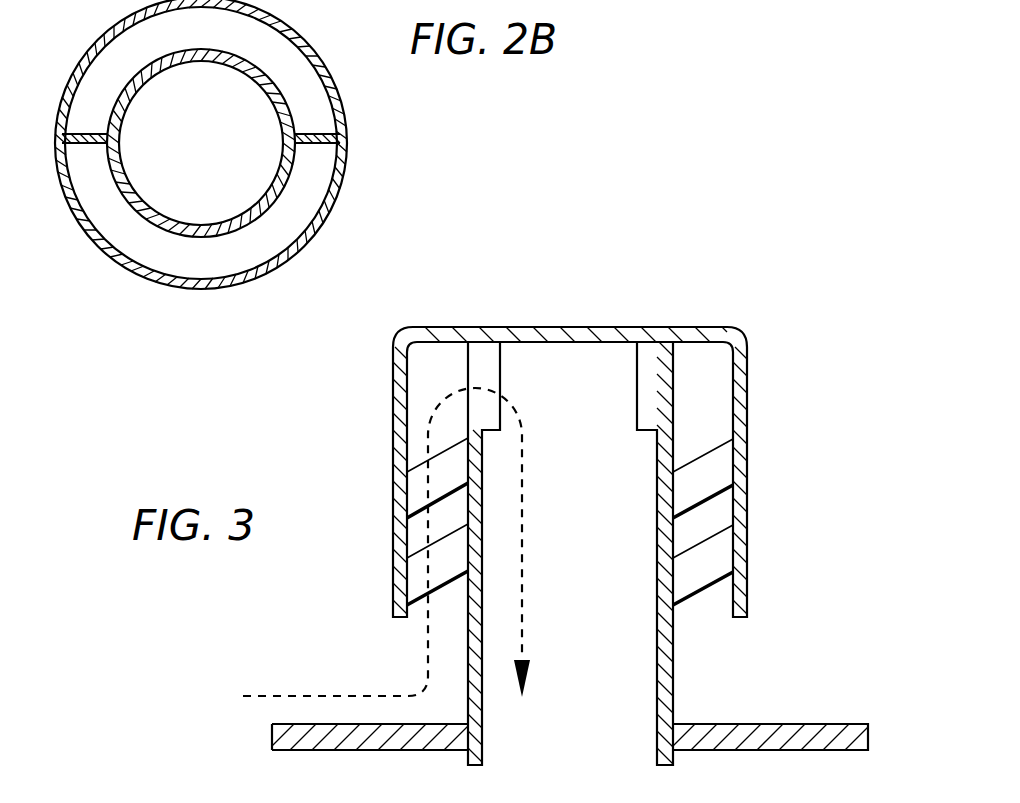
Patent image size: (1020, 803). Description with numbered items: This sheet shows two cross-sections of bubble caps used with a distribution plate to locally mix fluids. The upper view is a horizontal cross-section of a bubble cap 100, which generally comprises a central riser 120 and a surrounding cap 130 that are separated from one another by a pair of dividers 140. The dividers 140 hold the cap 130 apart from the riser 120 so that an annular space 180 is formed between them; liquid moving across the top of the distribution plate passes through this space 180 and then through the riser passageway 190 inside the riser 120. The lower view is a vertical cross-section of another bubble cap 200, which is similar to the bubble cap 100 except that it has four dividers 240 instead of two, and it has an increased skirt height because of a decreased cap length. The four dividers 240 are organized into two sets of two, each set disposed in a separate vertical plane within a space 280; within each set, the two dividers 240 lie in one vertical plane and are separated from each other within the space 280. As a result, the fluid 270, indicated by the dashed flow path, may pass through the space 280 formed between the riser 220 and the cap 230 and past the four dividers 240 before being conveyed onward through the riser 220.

In FIG. 2B, the bubble cap 100 is at (392, 170).
In FIG. 2B, the riser 120 is at (266, 62).
In FIG. 2B, the cap 130 is at (92, 245).
In FIG. 2B, the dividers 140 is at (84, 146).
In FIG. 2B, the space 180 is at (300, 204).
In FIG. 2B, the riser passageway 190 is at (219, 146).
In FIG. 3, the bubble cap 200 is at (727, 296).
In FIG. 3, the riser 220 is at (676, 652).
In FIG. 3, the cap 230 is at (749, 402).
In FIG. 3, the dividers 240 is at (414, 467).
In FIG. 3, the fluid 270 is at (270, 696).
In FIG. 3, the space 280 is at (414, 527).